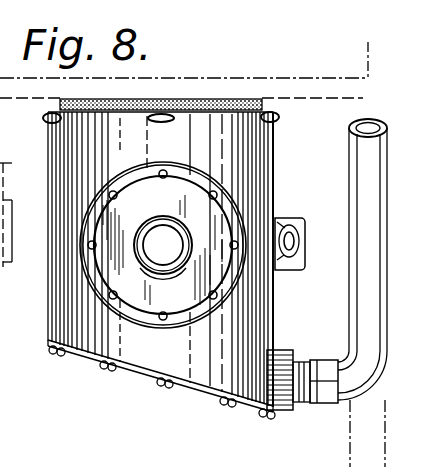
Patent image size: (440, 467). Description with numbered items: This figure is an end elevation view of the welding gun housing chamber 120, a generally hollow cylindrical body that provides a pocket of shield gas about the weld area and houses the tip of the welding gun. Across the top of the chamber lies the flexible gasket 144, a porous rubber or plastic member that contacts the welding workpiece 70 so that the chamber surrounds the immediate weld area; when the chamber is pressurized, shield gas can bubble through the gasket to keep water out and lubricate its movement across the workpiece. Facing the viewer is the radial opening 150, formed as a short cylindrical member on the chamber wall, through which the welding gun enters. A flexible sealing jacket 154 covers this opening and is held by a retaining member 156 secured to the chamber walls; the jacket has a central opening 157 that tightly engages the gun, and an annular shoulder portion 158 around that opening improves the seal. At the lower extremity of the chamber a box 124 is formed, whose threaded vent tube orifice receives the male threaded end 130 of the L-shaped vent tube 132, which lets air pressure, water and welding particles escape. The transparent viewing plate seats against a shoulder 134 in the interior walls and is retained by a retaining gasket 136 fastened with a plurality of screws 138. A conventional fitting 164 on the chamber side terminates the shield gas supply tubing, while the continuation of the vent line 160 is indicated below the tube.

The welding workpiece 70 is at (262, 80).
The housing chamber 120 is at (58, 163).
The flexible gasket 144 is at (218, 100).
The radial opening 150 is at (215, 178).
The retaining member 156 is at (230, 268).
The annular shoulder portion 158 is at (186, 228).
The opening in the jacket 157 is at (178, 248).
The flexible sealing jacket 154 is at (198, 279).
The fitting 164 is at (303, 262).
The vent tube 132 is at (358, 246).
The conduit continuation 160 is at (345, 433).
The male threaded end 130 is at (298, 405).
The box 124 is at (283, 412).
The shoulder 134 is at (77, 353).
The retaining gasket 136 is at (52, 345).
The screws 138 is at (160, 386).